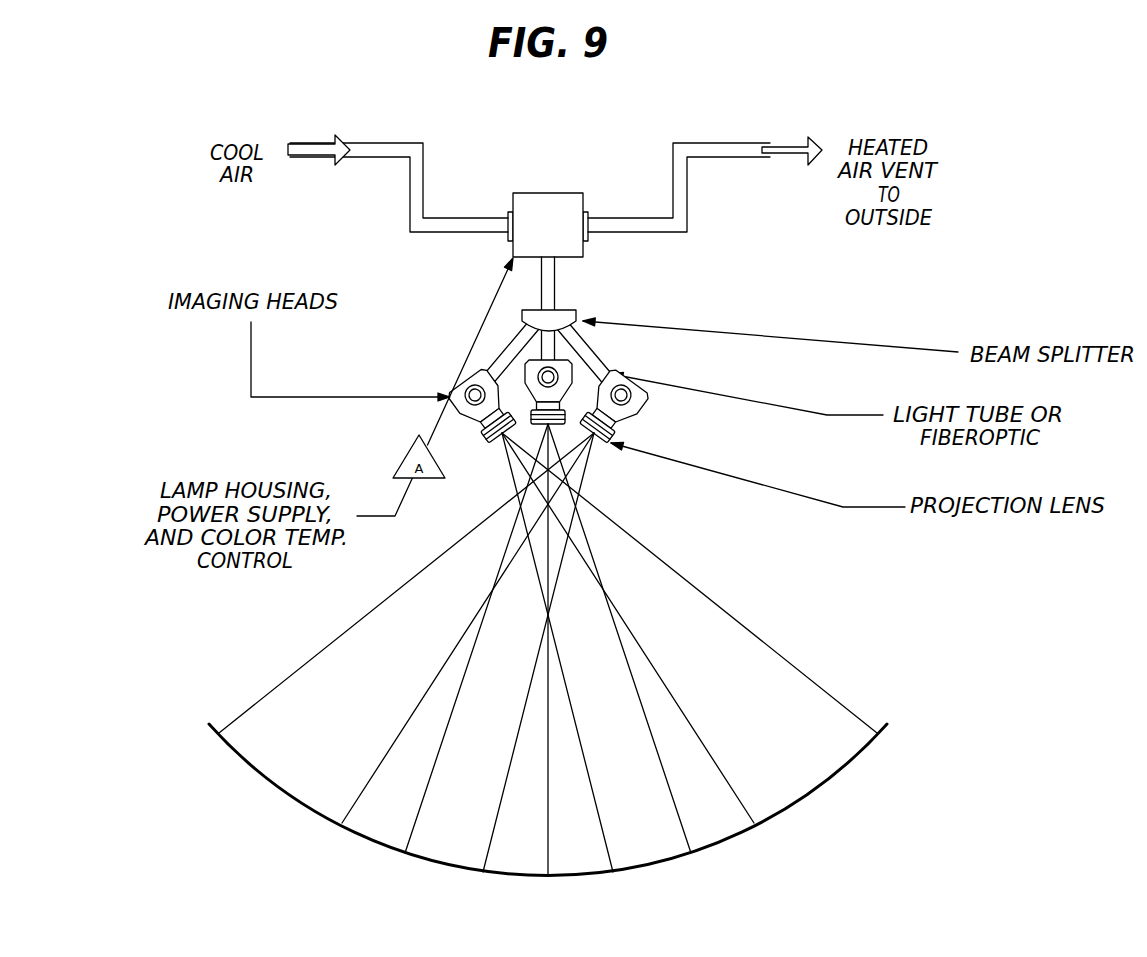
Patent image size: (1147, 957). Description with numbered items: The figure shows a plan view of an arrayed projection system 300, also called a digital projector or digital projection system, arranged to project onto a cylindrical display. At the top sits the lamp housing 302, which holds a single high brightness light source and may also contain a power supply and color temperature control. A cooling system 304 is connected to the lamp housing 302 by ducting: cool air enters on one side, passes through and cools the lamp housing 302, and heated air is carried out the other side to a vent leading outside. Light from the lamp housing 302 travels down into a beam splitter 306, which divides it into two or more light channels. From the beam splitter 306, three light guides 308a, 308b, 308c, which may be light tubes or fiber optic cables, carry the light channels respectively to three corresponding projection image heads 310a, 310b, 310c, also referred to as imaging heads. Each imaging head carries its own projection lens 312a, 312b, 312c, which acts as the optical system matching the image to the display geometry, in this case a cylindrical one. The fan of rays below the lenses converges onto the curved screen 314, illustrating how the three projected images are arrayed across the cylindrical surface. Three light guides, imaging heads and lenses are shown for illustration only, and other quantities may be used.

The arrayed projection system 300 is at (1045, 891).
The lamp housing 302 is at (557, 192).
The cooling system 304 is at (723, 142).
The beam splitter 306 is at (566, 309).
The light guide 308a is at (515, 342).
The light guide 308b is at (541, 342).
The light guide 308c is at (602, 352).
The projection image head 310a is at (463, 419).
The projection image head 310b is at (525, 378).
The projection image head 310c is at (643, 409).
The projection lens 312a is at (495, 445).
The projection lens 312b is at (561, 428).
The projection lens 312c is at (605, 445).
The curved screen 314 is at (840, 777).